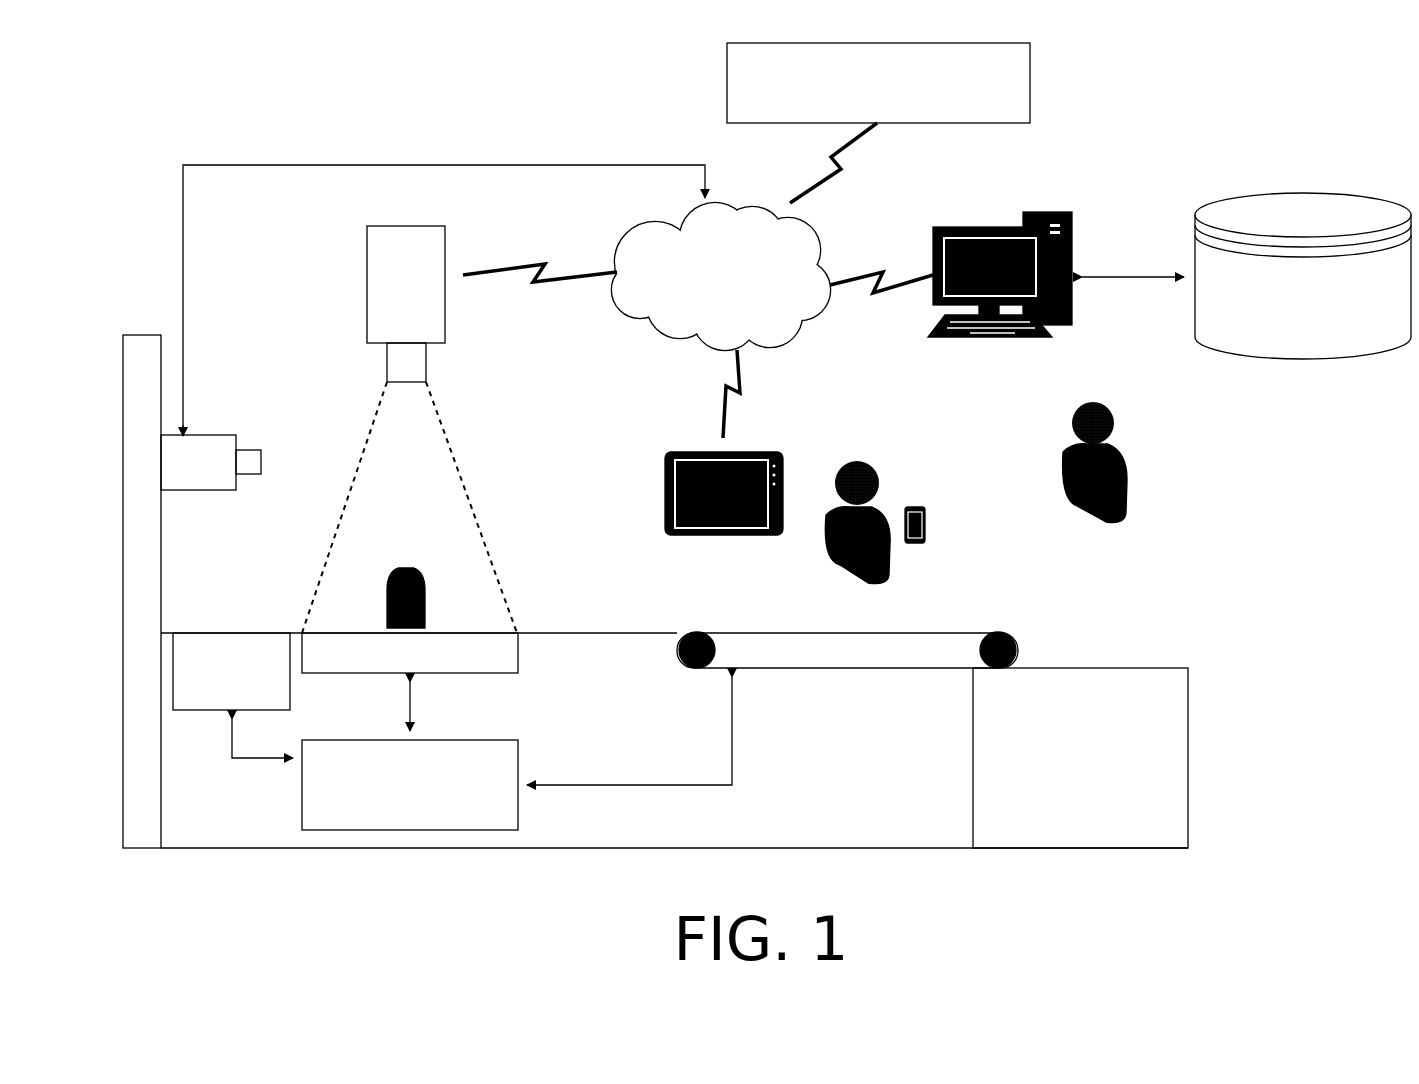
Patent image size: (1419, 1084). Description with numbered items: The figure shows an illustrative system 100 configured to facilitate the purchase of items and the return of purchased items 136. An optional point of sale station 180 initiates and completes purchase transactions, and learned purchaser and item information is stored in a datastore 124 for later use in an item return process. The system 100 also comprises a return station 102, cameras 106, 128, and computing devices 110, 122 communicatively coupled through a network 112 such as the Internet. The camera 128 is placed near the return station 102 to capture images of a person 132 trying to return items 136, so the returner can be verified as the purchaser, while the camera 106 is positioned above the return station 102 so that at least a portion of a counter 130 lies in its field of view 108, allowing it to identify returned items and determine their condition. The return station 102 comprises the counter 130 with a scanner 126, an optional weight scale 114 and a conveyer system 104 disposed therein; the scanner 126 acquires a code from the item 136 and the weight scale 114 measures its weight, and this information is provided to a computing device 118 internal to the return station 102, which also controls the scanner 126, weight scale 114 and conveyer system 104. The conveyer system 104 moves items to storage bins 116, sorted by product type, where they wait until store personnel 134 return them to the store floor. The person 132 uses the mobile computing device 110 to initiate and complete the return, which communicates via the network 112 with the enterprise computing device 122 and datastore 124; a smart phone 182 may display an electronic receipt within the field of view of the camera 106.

The system 100 is at (296, 128).
The return station 102 is at (239, 780).
The conveyer system 104 is at (847, 650).
The camera 106 is at (406, 277).
The field of view 108 is at (447, 432).
The computing device 110 is at (722, 519).
The network 112 is at (698, 280).
The weight scale 114 is at (410, 653).
The storage bin 116 is at (1080, 758).
The computing device 118 is at (517, 753).
The computing device 122 is at (1048, 309).
The datastore 124 is at (1303, 306).
The scanner 126 is at (231, 671).
The camera 128 is at (213, 432).
The counter 130 is at (543, 633).
The person 132 is at (870, 536).
The store personnel 134 is at (1106, 477).
The item 136 is at (405, 560).
The point of sale station 180 is at (878, 83).
The smart phone 182 is at (913, 541).